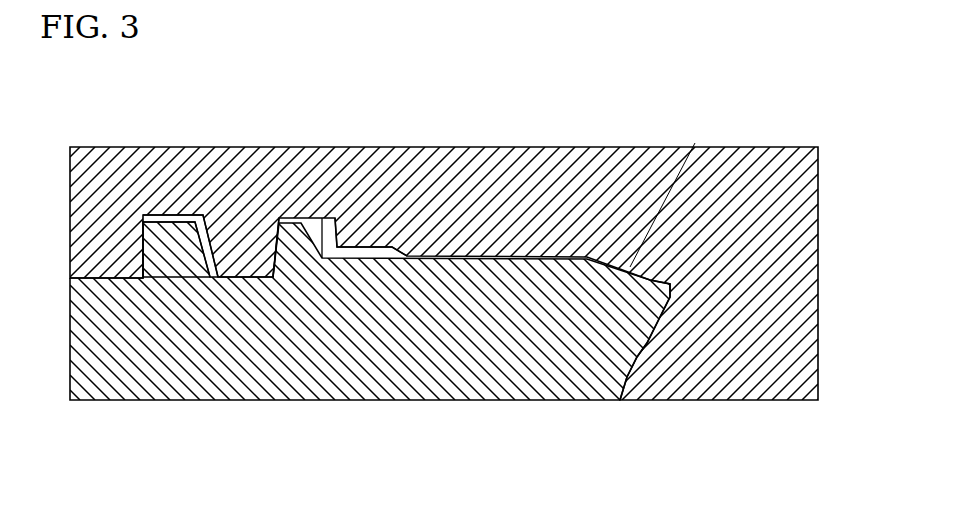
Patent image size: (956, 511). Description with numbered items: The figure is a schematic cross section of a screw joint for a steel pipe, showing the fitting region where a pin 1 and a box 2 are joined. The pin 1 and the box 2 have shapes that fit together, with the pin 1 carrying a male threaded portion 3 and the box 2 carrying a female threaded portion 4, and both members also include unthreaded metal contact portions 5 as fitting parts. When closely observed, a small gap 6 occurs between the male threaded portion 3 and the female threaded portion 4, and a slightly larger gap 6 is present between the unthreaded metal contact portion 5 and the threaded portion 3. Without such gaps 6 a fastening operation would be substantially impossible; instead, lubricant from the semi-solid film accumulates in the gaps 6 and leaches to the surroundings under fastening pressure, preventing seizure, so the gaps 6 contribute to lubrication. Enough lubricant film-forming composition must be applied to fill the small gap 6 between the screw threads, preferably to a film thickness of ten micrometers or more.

The pin 1 is at (315, 366).
The box 2 is at (530, 157).
The male threaded portion 3 is at (178, 258).
The female threaded portion 4 is at (182, 205).
The unthreaded metal contact portion 5 is at (695, 143).
The gap 6 is at (218, 227).